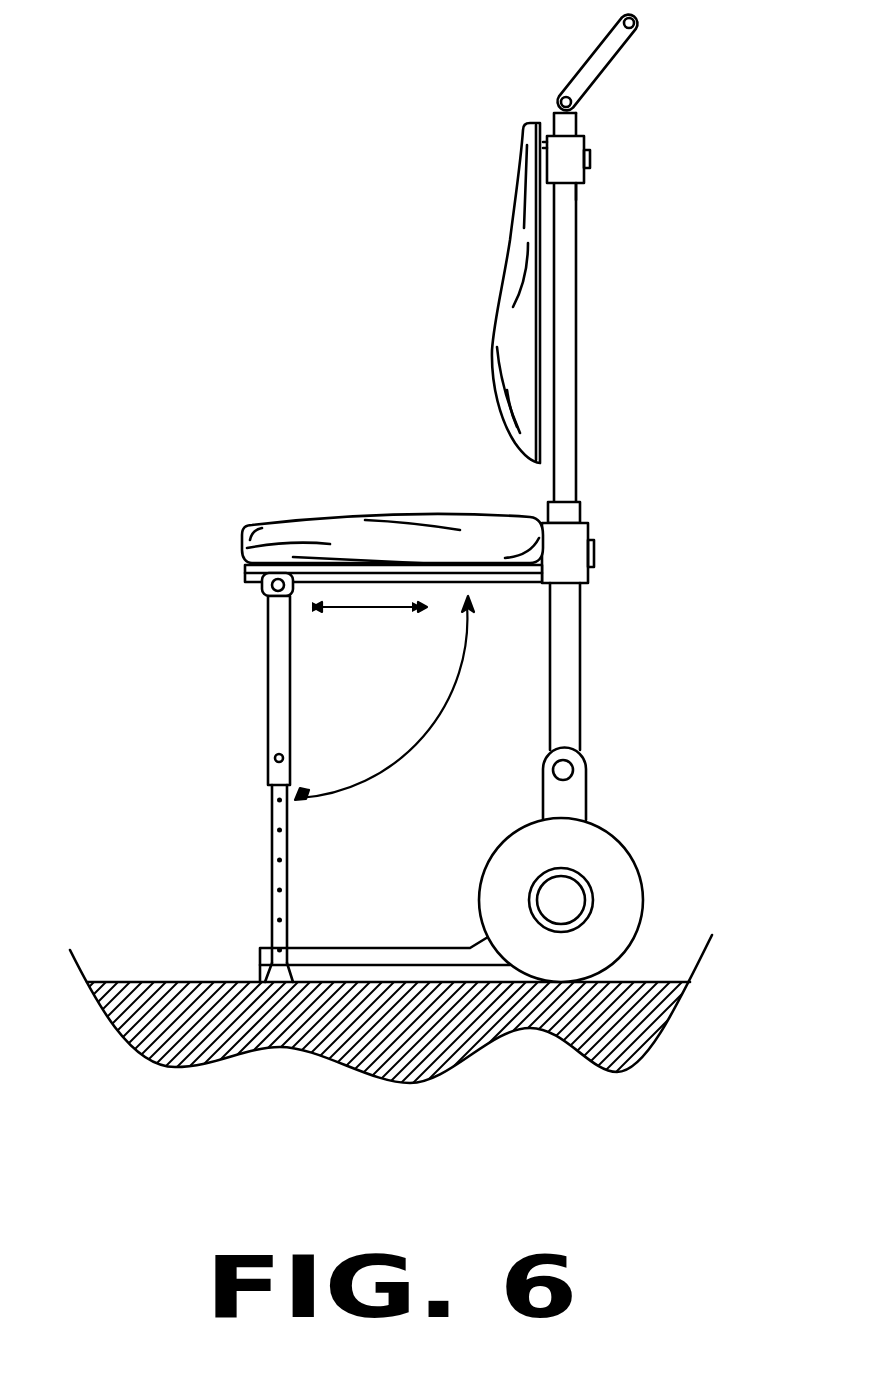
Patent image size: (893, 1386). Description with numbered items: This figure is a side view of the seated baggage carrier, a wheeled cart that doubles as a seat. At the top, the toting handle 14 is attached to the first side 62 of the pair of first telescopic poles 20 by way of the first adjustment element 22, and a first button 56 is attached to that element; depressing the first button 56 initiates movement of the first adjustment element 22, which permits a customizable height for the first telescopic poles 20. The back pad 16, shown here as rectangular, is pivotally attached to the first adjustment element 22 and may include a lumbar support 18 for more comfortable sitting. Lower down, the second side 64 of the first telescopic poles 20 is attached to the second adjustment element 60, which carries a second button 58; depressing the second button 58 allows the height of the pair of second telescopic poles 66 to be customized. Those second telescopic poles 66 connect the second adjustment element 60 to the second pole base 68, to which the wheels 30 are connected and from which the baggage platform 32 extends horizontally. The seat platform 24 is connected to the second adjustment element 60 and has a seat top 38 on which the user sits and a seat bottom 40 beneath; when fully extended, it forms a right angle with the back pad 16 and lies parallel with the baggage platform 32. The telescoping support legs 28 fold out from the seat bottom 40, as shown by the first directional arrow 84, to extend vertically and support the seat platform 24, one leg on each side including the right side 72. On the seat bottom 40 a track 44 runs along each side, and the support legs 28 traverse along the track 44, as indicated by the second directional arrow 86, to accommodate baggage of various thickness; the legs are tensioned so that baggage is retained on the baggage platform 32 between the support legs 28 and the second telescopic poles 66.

The toting handle 14 is at (580, 57).
The back pad 16 is at (505, 305).
The lumbar support 18 is at (497, 392).
The pair of first telescopic poles 20 is at (577, 293).
The first adjustment element 22 is at (567, 148).
The seat platform 24 is at (320, 535).
The support legs 28 is at (278, 732).
The wheels 30 is at (608, 905).
The baggage platform 32 is at (442, 955).
The seat top 38 is at (383, 517).
The seat bottom 40 is at (507, 583).
The track 44 is at (310, 580).
The first button 56 is at (590, 162).
The second button 58 is at (594, 555).
The second adjustment element 60 is at (567, 547).
The first side 62 is at (578, 187).
The second side 64 is at (577, 503).
The pair of second telescopic poles 66 is at (580, 690).
The second pole base 68 is at (583, 798).
The right side 72 is at (330, 545).
The first directional arrow 84 is at (418, 733).
The second directional arrow 86 is at (367, 608).